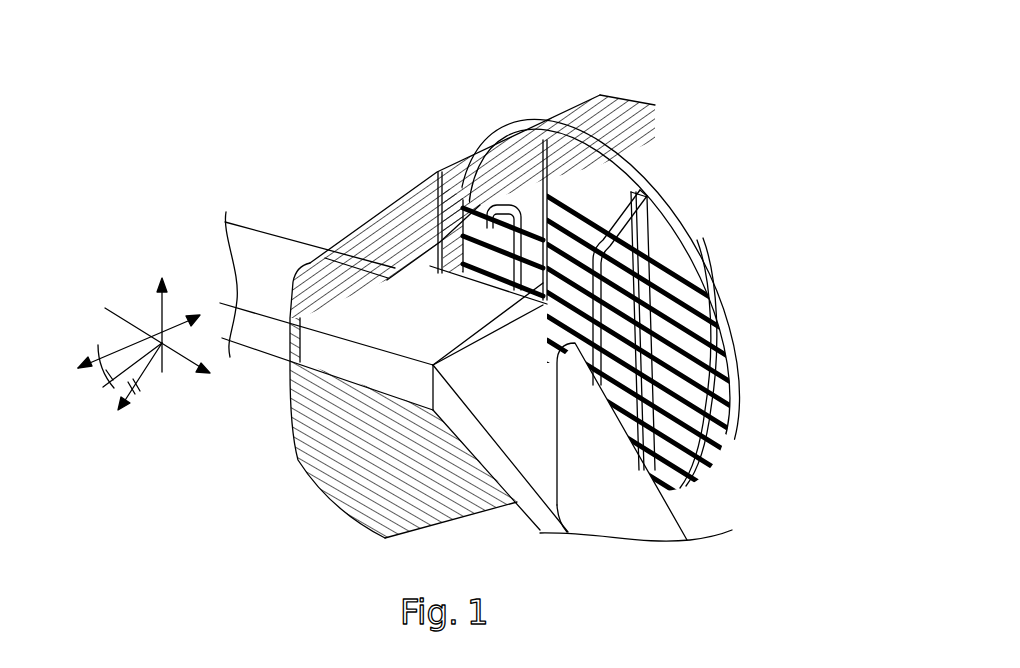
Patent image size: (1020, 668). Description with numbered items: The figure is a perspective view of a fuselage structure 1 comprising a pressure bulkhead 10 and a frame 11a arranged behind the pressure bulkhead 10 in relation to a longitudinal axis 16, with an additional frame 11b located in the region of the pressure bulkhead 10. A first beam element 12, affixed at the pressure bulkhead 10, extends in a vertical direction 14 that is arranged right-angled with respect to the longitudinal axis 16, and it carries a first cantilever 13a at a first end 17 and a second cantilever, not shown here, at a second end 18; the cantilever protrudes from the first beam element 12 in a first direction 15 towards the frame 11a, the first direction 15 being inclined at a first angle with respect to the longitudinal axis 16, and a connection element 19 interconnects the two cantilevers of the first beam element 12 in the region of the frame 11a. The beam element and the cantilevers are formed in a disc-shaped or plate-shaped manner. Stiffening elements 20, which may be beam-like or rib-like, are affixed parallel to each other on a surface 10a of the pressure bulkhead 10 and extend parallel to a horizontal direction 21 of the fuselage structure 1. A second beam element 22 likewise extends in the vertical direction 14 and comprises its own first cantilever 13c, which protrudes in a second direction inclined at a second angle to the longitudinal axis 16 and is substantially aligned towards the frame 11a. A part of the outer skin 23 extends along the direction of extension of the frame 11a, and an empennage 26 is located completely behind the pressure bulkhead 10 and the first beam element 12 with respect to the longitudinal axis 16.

The fuselage structure 1 is at (198, 158).
The pressure bulkhead 10 is at (640, 307).
The surface of the pressure bulkhead 10a is at (590, 183).
The frame 11a is at (744, 352).
The additional frame 11b is at (742, 398).
The first beam element 12 is at (118, 350).
The first cantilever 13a is at (540, 153).
The first cantilever 13c is at (440, 186).
The vertical direction 14 is at (158, 320).
The first direction 15 is at (146, 385).
The longitudinal axis 16 is at (177, 327).
The first end 17 is at (652, 222).
The second end 18 is at (693, 490).
The connection element 19 is at (538, 543).
The stiffening elements 20 is at (718, 283).
The horizontal direction 21 is at (184, 365).
The second beam element 22 is at (517, 247).
The outer skin 23 is at (348, 460).
The empennage 26 is at (612, 515).